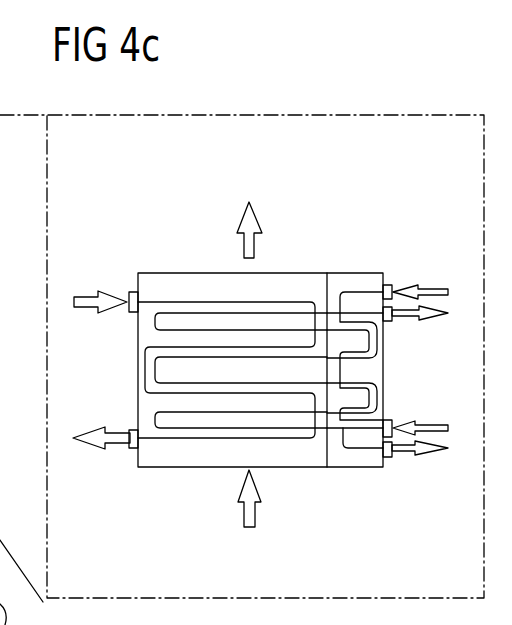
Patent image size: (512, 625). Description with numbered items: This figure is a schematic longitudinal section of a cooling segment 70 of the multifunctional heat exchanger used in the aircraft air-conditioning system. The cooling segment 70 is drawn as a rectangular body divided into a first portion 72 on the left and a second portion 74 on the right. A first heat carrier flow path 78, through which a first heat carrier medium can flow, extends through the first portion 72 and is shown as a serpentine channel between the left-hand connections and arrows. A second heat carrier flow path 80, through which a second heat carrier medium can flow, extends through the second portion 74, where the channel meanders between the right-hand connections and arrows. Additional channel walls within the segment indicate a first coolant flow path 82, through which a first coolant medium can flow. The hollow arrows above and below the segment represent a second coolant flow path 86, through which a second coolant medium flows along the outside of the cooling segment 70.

The cooling segment 70 is at (385, 213).
The first portion 72 is at (163, 281).
The second portion 74 is at (356, 283).
The first heat carrier flow path 78 is at (163, 445).
The first coolant flow path 82 is at (207, 433).
The second heat carrier flow path 80 is at (365, 449).
The second coolant flow path 86 is at (256, 509).